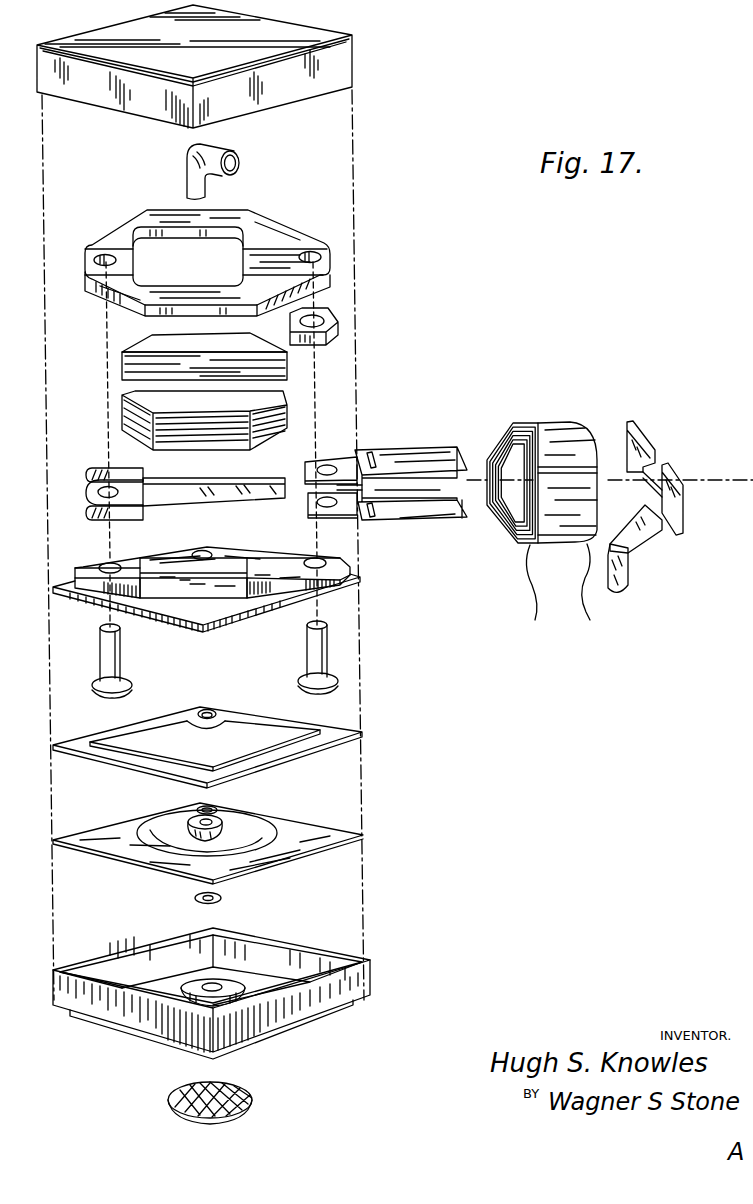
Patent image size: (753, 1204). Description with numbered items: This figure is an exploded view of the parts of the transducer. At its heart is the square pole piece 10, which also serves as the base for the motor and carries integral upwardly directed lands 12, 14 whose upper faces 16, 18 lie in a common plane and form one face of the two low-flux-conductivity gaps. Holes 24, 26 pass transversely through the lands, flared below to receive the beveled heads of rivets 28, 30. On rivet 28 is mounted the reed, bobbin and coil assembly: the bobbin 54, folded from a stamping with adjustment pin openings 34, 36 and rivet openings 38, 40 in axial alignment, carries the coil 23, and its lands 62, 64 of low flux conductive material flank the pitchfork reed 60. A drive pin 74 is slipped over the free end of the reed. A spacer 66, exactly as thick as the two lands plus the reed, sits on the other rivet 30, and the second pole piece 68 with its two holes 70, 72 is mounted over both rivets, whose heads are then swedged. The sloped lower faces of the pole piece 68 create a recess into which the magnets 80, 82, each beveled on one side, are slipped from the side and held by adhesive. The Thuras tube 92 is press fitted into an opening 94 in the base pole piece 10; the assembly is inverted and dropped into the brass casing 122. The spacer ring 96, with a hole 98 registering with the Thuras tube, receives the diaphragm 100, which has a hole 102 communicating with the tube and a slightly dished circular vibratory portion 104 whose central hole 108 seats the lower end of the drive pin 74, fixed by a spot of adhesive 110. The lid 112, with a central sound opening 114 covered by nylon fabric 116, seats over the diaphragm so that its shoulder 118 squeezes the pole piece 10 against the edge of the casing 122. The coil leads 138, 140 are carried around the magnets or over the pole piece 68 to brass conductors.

The pole piece 10 is at (206, 582).
The land 12 is at (58, 586).
The land 14 is at (206, 560).
The upper face of land 16 is at (80, 556).
The upper face of land 18 is at (300, 553).
The coil 23 is at (555, 425).
The hole 24 is at (110, 563).
The hole 26 is at (328, 560).
The rivet 28 is at (103, 662).
The rivet 30 is at (325, 658).
The adjustment pin opening 34 is at (374, 452).
The adjustment pin opening 36 is at (387, 507).
The rivet opening 38 is at (332, 464).
The rivet opening 40 is at (328, 506).
The bobbin 54 is at (411, 472).
The reed 60 is at (88, 491).
The land of bobbin 62 is at (348, 434).
The land of bobbin 64 is at (307, 520).
The spacer 66 is at (370, 318).
The second pole piece 68 is at (208, 245).
The hole 70 is at (94, 262).
The hole 72 is at (321, 257).
The drive pin 74 is at (697, 534).
The magnet 80 is at (122, 360).
The magnet 82 is at (128, 422).
The Thuras tube 92 is at (234, 150).
The opening 94 is at (202, 551).
The spacer ring 96 is at (236, 723).
The hole 98 is at (214, 708).
The diaphragm 100 is at (238, 829).
The hole 102 is at (215, 810).
The circular vibratory portion 104 is at (290, 823).
The central hole 108 is at (190, 822).
The spot of adhesive 110 is at (222, 898).
The lid 112 is at (224, 985).
The sound opening 114 is at (222, 986).
The nylon fabric 116 is at (245, 1090).
The shoulder 118 is at (70, 1016).
The casing 122 is at (348, 67).
The coil lead 138 is at (532, 578).
The coil lead 140 is at (590, 600).